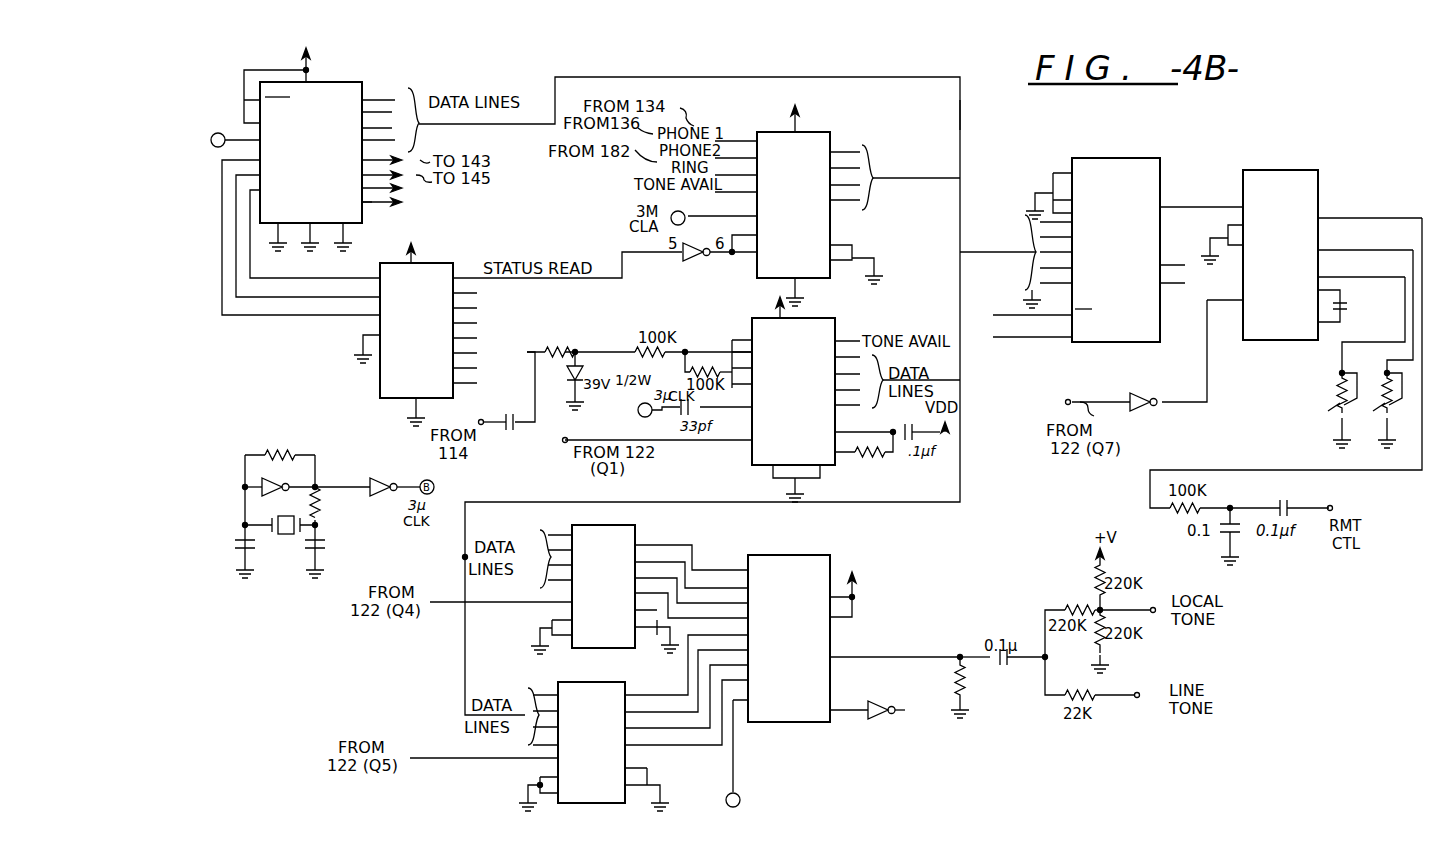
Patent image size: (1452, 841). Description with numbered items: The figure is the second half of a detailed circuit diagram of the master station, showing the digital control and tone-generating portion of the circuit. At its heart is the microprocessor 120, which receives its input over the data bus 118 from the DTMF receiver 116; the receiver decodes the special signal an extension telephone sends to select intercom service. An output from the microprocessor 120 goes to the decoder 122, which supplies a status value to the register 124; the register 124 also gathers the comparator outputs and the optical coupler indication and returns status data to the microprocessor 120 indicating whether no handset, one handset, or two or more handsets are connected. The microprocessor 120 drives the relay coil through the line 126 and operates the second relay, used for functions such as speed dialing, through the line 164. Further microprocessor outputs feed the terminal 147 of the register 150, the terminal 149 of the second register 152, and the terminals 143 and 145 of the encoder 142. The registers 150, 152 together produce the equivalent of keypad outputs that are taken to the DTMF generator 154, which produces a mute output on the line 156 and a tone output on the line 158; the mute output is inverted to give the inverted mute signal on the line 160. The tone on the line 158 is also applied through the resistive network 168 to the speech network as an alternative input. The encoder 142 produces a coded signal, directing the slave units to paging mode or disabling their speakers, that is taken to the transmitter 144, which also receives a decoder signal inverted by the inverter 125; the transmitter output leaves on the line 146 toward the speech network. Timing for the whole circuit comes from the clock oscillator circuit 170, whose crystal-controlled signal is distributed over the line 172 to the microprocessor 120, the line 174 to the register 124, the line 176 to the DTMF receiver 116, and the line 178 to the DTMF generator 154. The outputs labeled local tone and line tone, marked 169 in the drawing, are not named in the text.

The DTMF receiver 116 is at (822, 318).
The data bus 118 is at (961, 115).
The microprocessor 120 is at (343, 86).
The decoder 122 is at (441, 264).
The register 124 is at (832, 132).
The inverter 125 is at (1140, 412).
The line 126 is at (368, 202).
The encoder 142 is at (1148, 155).
The terminal 143 is at (1008, 311).
The transmitter 144 is at (1295, 170).
The terminal 145 is at (1000, 338).
The line 146 is at (1319, 505).
The terminal 147 is at (477, 604).
The terminal 149 is at (453, 758).
The register 150 is at (624, 516).
The second register 152 is at (613, 682).
The DTMF generator 154 is at (803, 548).
The line 156 is at (837, 722).
The line 158 is at (942, 656).
The line 160 is at (891, 716).
The line 164 is at (402, 188).
The resistive network 168 is at (1088, 602).
The line tone output 169 is at (1122, 697).
The clock oscillator circuit 170 is at (314, 455).
The line 172 is at (241, 127).
The line 174 is at (667, 212).
The line 176 is at (645, 418).
The line 178 is at (736, 764).